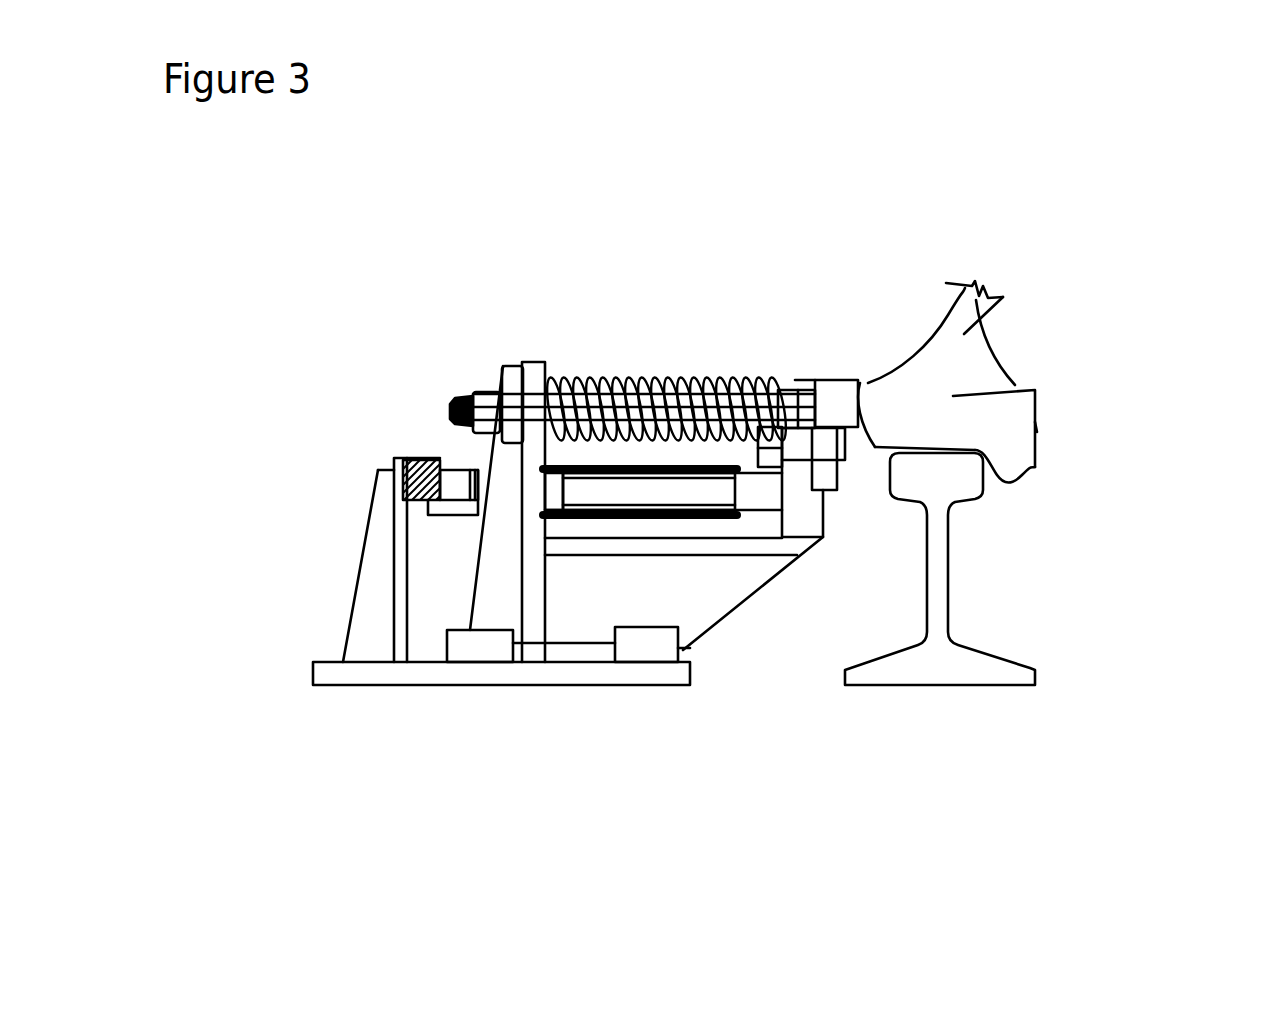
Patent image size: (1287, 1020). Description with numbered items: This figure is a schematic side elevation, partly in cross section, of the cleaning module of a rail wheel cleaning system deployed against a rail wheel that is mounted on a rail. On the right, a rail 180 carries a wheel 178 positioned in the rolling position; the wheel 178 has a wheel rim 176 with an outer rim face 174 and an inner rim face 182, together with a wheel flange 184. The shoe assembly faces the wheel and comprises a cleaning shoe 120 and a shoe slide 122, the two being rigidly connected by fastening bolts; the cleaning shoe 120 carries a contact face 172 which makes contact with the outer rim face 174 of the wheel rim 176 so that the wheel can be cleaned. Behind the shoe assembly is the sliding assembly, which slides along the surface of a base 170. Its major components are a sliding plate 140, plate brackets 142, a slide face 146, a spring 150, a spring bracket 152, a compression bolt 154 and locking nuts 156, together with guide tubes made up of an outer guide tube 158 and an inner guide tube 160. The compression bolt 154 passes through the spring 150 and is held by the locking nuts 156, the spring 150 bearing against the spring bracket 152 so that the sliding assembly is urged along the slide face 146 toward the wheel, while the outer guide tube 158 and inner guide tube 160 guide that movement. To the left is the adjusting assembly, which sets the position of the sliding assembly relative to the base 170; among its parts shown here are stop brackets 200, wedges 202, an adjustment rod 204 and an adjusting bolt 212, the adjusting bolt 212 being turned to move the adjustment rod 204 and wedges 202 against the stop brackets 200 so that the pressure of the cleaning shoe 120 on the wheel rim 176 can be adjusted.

The cleaning shoe 120 is at (820, 383).
The shoe slide 122 is at (778, 385).
The sliding plate 140 is at (552, 652).
The plate brackets 142 is at (643, 645).
The slide face 146 is at (693, 528).
The spring 150 is at (588, 382).
The spring bracket 152 is at (532, 372).
The compression bolt 154 is at (455, 403).
The locking nuts 156 is at (490, 402).
The outer guide tube 158 is at (713, 520).
The inner guide tube 160 is at (757, 493).
The base 170 is at (413, 672).
The contact face 172 is at (860, 385).
The outer rim face 174 is at (880, 385).
The wheel rim 176 is at (990, 392).
The wheel 178 is at (1003, 297).
The rail 180 is at (945, 553).
The inner rim face 182 is at (1035, 427).
The wheel flange 184 is at (1020, 453).
The stop brackets 200 is at (363, 625).
The wedges 202 is at (460, 487).
The adjustment rod 204 is at (405, 500).
The adjusting bolt 212 is at (254, 720).